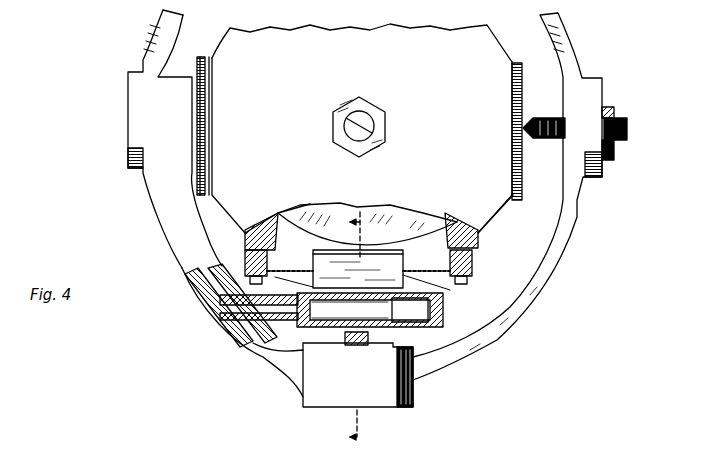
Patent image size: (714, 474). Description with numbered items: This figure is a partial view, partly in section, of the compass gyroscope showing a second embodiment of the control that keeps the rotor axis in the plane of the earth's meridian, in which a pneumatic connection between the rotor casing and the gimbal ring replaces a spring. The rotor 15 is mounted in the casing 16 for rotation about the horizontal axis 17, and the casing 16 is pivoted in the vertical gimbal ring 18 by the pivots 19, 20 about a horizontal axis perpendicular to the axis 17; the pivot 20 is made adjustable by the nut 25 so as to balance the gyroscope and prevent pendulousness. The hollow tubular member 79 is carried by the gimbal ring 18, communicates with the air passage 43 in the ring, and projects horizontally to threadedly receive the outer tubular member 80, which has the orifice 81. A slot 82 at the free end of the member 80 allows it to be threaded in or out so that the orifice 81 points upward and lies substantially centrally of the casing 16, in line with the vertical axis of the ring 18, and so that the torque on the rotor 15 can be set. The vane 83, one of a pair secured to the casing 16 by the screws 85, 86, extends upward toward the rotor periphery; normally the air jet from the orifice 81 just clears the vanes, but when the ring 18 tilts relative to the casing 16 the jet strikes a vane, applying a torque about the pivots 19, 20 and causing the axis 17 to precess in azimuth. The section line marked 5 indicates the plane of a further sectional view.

The rotor 15 is at (436, 220).
The casing 16 is at (500, 215).
The horizontal axis 17 is at (372, 115).
The vertical gimbal ring 18 is at (535, 275).
The pivot 19 is at (207, 112).
The pivot 20 is at (551, 140).
The nut 25 is at (610, 150).
The air passage 43 is at (222, 312).
The hollow tubular member 79 is at (246, 300).
The outer tubular member 80 is at (445, 320).
The orifice 81 is at (358, 300).
The slot 82 is at (462, 298).
The vane 83 is at (318, 262).
The screw 85 is at (262, 280).
The screw 86 is at (472, 278).
The section line 5- 5 is at (367, 329).